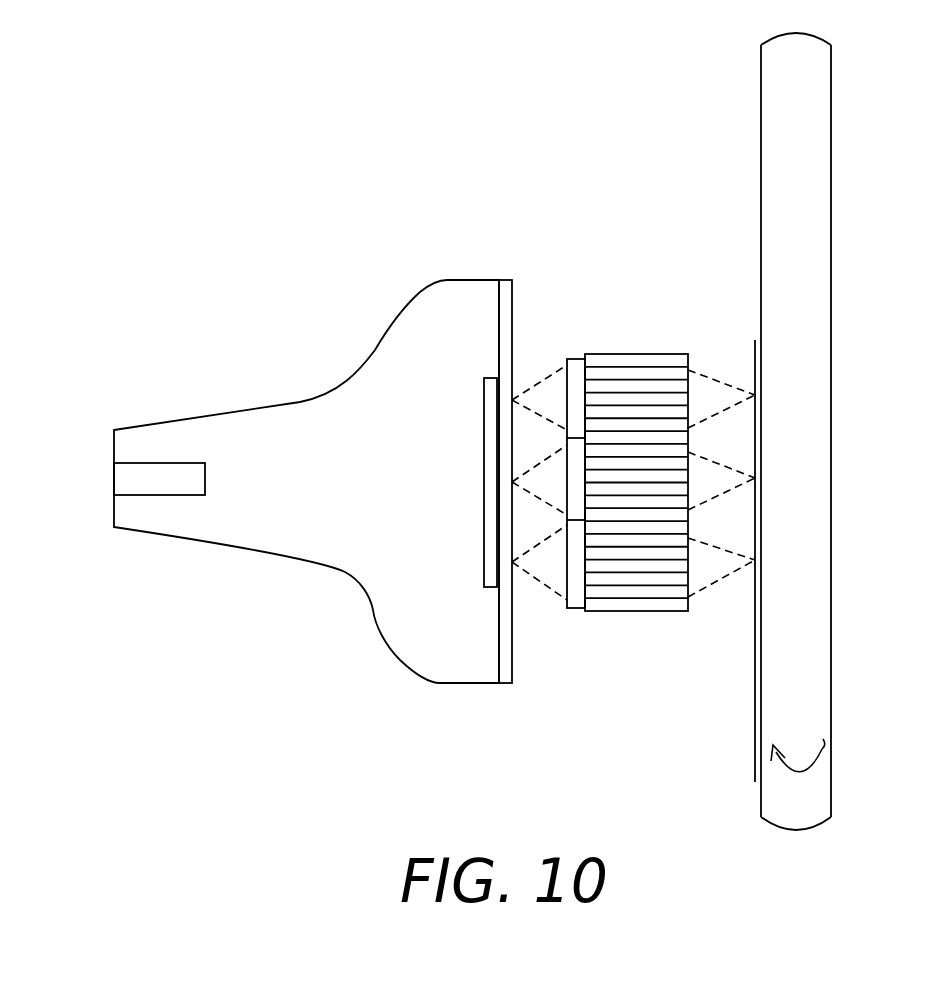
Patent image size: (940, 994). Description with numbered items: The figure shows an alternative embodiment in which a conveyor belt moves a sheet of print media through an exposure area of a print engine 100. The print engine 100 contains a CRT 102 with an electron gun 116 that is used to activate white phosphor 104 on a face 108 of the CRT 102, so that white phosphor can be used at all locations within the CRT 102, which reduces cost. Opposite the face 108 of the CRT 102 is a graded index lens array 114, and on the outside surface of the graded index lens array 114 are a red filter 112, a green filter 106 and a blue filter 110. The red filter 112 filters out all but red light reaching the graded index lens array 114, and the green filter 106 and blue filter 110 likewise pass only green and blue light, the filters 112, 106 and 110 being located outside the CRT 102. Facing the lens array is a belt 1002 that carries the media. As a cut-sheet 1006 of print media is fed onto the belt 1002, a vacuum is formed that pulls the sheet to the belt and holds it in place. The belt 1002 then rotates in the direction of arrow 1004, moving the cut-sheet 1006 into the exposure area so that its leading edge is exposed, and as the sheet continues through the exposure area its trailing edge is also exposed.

The print engine 100 is at (684, 217).
The CRT 102 is at (355, 372).
The white phosphor 104 is at (484, 418).
The green filter 106 is at (567, 487).
The face 108 is at (505, 280).
The blue filter 110 is at (565, 565).
The red filter 112 is at (562, 380).
The graded index lens array 114 is at (607, 354).
The electron gun 116 is at (205, 487).
The belt 1002 is at (832, 560).
The arrow 1004 is at (812, 768).
The cut-sheet 1006 is at (755, 668).